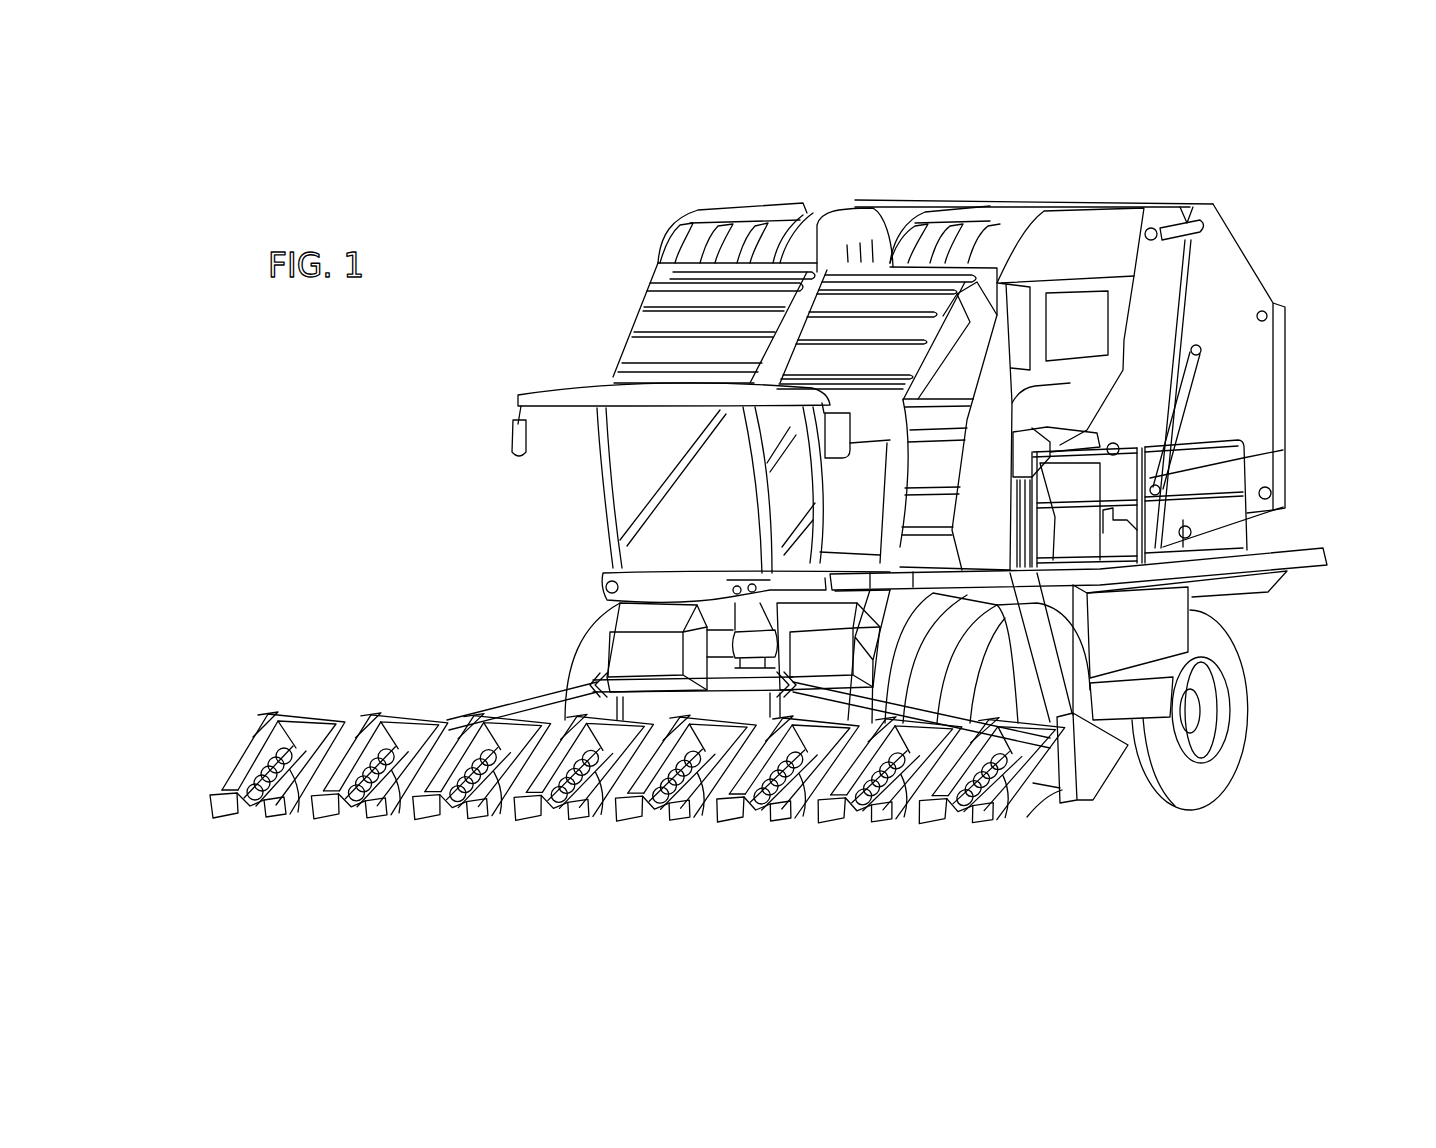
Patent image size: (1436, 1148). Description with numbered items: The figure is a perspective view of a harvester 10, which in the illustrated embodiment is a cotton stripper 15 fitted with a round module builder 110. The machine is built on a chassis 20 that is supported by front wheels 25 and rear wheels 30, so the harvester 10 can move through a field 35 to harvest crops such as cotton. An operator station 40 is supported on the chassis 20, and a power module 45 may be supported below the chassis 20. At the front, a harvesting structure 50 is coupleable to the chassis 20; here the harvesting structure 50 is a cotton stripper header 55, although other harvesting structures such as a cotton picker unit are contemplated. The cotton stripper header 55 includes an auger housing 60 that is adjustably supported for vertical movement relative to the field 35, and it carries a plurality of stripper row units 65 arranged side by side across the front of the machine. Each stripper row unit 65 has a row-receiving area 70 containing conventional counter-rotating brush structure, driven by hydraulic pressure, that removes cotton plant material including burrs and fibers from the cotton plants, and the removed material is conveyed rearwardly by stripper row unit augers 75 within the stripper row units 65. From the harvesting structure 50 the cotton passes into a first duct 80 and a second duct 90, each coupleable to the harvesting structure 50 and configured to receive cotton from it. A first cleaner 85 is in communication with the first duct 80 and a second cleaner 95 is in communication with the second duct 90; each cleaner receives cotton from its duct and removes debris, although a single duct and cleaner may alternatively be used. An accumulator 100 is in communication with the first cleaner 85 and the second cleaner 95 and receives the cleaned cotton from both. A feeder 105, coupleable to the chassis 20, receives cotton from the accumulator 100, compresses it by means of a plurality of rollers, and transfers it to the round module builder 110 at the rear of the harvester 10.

The harvester 10 is at (543, 174).
The cotton stripper 15 is at (626, 208).
The chassis 20 is at (1307, 563).
The front wheels 25 is at (1027, 817).
The rear wheels 30 is at (1188, 793).
The field 35 is at (1334, 779).
The operator station 40 is at (557, 397).
The power module 45 is at (1162, 630).
The harvesting structure 50 is at (376, 618).
The cotton stripper header 55 is at (459, 618).
The auger housing 60 is at (1098, 763).
The stripper row units 65 is at (285, 768).
The row-receiving area 70 is at (239, 831).
The stripper row unit augers 75 is at (282, 752).
The first duct 80 is at (803, 667).
The first cleaner 85 is at (970, 521).
The second duct 90 is at (634, 667).
The second cleaner 95 is at (752, 375).
The accumulator 100 is at (1077, 377).
The feeder 105 is at (1100, 542).
The round module builder 110 is at (1293, 231).